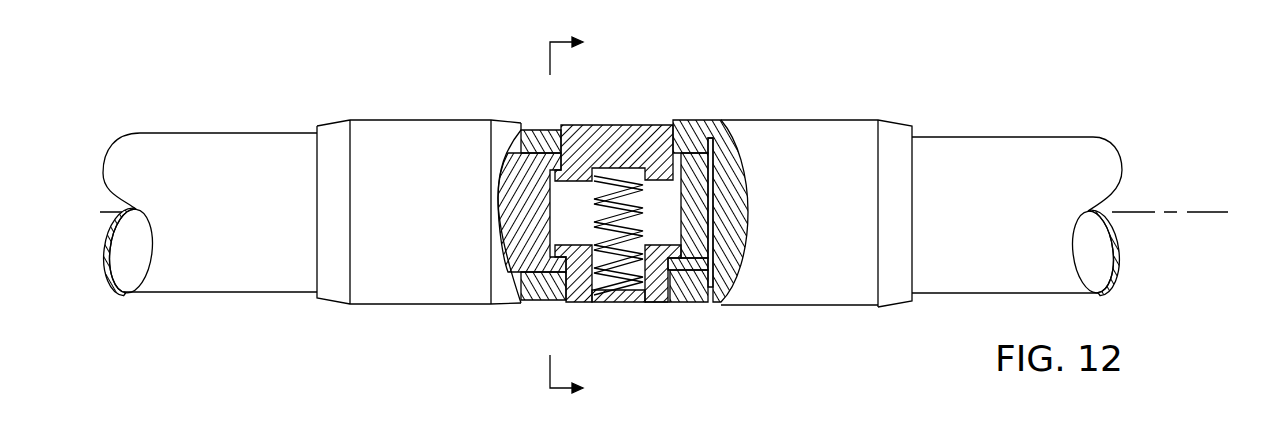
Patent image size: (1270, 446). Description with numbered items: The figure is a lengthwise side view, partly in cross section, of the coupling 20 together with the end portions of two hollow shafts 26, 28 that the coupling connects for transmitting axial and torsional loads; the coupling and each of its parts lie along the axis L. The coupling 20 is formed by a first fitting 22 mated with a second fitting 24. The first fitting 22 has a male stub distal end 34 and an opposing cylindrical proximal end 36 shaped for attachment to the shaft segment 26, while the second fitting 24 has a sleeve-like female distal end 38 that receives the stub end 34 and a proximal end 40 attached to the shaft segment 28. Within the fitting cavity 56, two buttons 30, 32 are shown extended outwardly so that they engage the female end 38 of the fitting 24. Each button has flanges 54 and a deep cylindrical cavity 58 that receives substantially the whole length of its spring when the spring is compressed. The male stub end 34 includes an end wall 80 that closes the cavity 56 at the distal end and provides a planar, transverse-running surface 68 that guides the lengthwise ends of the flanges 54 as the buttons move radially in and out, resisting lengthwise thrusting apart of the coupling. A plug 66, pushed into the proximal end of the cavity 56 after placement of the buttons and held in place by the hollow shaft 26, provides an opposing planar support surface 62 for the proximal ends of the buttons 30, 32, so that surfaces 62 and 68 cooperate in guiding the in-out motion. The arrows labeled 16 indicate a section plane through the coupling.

The section line 16- 16 is at (579, 217).
The coupler 20 is at (828, 322).
The first fitting 22 is at (357, 119).
The second fitting 24 is at (812, 120).
The shaft segment 26 is at (203, 131).
The shaft segment 28 is at (1010, 140).
The button 30 is at (641, 302).
The button 32 is at (638, 124).
The distal end (male stub end) 34 is at (695, 126).
The proximal end 36 is at (866, 128).
The distal end (female end) 38 is at (543, 129).
The proximal end 40 is at (410, 125).
The flanges 54 is at (706, 259).
The cavity 56 is at (590, 239).
The cylindrical cavity 58 is at (615, 301).
The support surface 62 is at (553, 198).
The plug 66 is at (502, 183).
The planar surface 68 is at (698, 198).
The end wall 80 is at (711, 242).
The axis L is at (1198, 211).